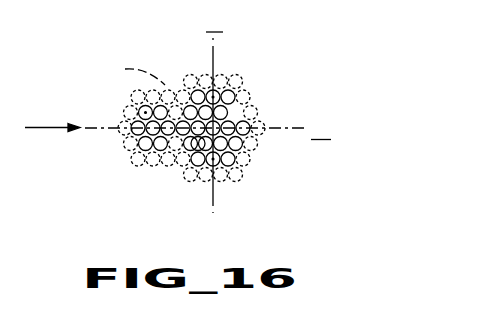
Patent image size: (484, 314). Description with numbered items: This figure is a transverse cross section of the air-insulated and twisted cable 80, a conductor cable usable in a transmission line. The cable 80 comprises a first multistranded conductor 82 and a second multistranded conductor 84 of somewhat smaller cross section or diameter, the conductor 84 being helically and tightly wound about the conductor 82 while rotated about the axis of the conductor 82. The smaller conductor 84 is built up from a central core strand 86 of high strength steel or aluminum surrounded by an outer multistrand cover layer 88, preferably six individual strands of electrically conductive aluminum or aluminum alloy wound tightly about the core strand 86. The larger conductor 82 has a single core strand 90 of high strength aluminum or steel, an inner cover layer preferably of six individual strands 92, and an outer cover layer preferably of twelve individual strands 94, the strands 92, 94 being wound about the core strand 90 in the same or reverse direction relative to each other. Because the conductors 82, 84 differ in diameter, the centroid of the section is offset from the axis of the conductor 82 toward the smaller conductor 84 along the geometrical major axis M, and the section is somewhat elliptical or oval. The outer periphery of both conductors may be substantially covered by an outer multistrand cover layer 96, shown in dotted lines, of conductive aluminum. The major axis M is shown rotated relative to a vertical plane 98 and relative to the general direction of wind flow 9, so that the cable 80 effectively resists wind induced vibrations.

The wind flow 9 is at (42, 124).
The cable 80 is at (174, 70).
The first multistranded conductor 82 is at (244, 87).
The second multistranded conductor 84 is at (127, 106).
The central core strand 86 is at (132, 149).
The outer multistrand cover layer 88 is at (125, 135).
The core strand 90 is at (168, 157).
The individual strands of inner cover layer 92 is at (197, 148).
The individual strands of outer cover layer 94 is at (232, 150).
The outer multistrand cover layer 96 is at (132, 74).
The vertical plane 98 is at (213, 57).